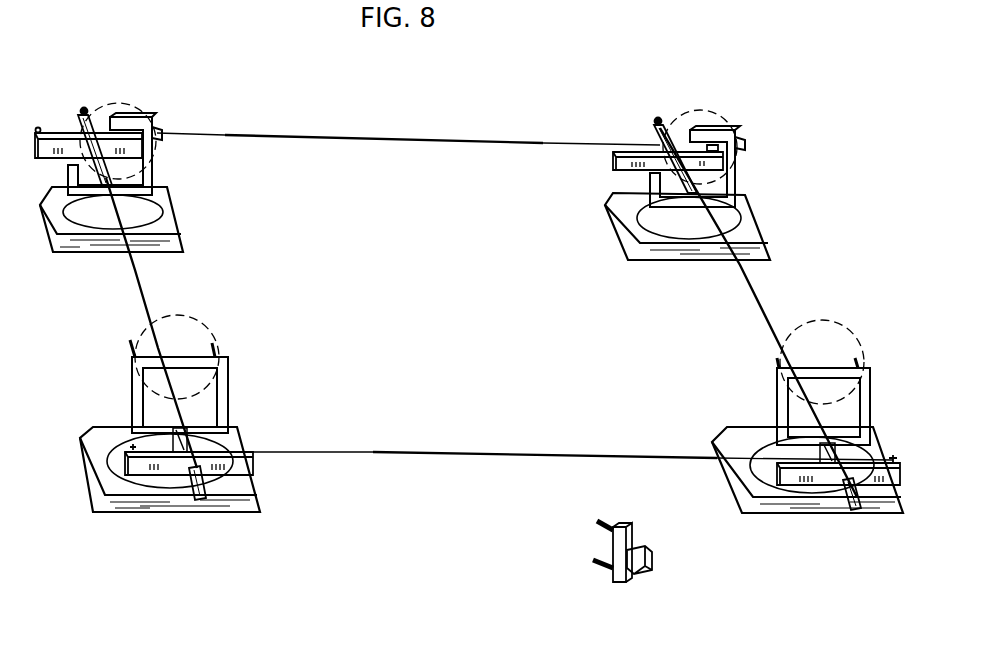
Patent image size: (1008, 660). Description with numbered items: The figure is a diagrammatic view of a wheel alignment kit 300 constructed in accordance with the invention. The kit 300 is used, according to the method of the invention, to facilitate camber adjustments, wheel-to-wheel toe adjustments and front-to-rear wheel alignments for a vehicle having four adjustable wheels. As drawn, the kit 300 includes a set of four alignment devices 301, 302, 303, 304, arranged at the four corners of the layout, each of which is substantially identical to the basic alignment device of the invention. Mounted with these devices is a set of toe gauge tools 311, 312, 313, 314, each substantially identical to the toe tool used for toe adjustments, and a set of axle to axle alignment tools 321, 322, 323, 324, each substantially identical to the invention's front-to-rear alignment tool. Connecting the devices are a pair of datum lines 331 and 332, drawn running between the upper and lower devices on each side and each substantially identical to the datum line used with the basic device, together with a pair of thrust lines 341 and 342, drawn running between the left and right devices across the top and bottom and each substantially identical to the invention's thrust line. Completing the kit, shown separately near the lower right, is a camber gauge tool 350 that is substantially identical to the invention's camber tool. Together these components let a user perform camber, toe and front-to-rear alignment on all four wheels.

The wheel alignment kit 300 is at (256, 528).
The alignment device 301 is at (733, 481).
The alignment device 302 is at (665, 98).
The alignment device 303 is at (265, 473).
The alignment device 304 is at (60, 114).
The toe gauge tool 311 is at (769, 401).
The toe gauge tool 312 is at (760, 186).
The toe gauge tool 313 is at (238, 373).
The toe gauge tool 314 is at (176, 168).
The axle to axle alignment tool 321 is at (846, 523).
The axle to axle alignment tool 322 is at (198, 520).
The axle to axle alignment tool 323 is at (642, 123).
The axle to axle alignment tool 324 is at (118, 90).
The datum line 331 is at (741, 286).
The datum line 332 is at (150, 280).
The thrust line 341 is at (542, 464).
The thrust line 342 is at (340, 126).
The camber gauge tool 350 is at (641, 585).